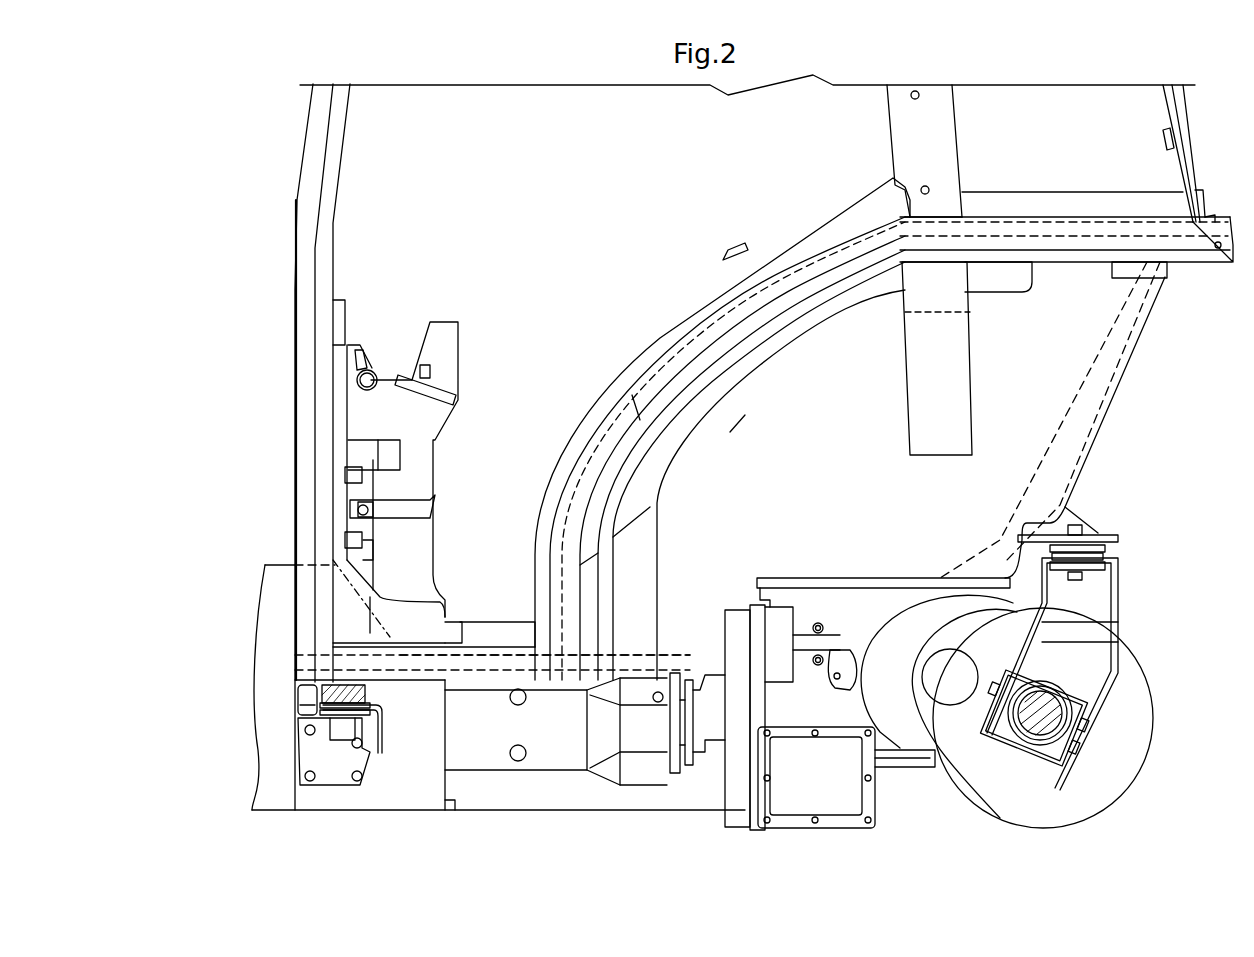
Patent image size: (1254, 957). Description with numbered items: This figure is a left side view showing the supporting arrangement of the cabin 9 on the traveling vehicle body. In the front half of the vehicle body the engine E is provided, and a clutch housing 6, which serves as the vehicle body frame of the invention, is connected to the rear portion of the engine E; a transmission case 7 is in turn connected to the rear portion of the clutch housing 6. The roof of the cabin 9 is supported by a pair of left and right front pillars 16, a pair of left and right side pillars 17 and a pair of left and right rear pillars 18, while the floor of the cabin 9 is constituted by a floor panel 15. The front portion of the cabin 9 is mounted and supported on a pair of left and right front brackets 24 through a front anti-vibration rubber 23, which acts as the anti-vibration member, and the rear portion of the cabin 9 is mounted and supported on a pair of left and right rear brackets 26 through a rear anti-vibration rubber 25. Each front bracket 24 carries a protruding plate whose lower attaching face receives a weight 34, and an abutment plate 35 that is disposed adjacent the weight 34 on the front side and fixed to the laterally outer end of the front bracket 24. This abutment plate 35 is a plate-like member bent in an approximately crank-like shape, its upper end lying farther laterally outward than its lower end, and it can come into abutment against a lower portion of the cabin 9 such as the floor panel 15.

The cabin 9 is at (300, 150).
The front pillar 16 is at (300, 320).
The side pillar 17 is at (900, 133).
The rear pillar 18 is at (1175, 114).
The engine E is at (277, 570).
The floor panel 15 is at (477, 670).
The abutment plate 35 is at (308, 700).
The front anti-vibration rubber 23 is at (368, 697).
The weight 34 is at (335, 732).
The front bracket 24 is at (395, 735).
The clutch housing 6 is at (330, 800).
The transmission case 7 is at (905, 757).
The rear anti-vibration rubber 25 is at (1110, 545).
The rear bracket 26 is at (1120, 618).